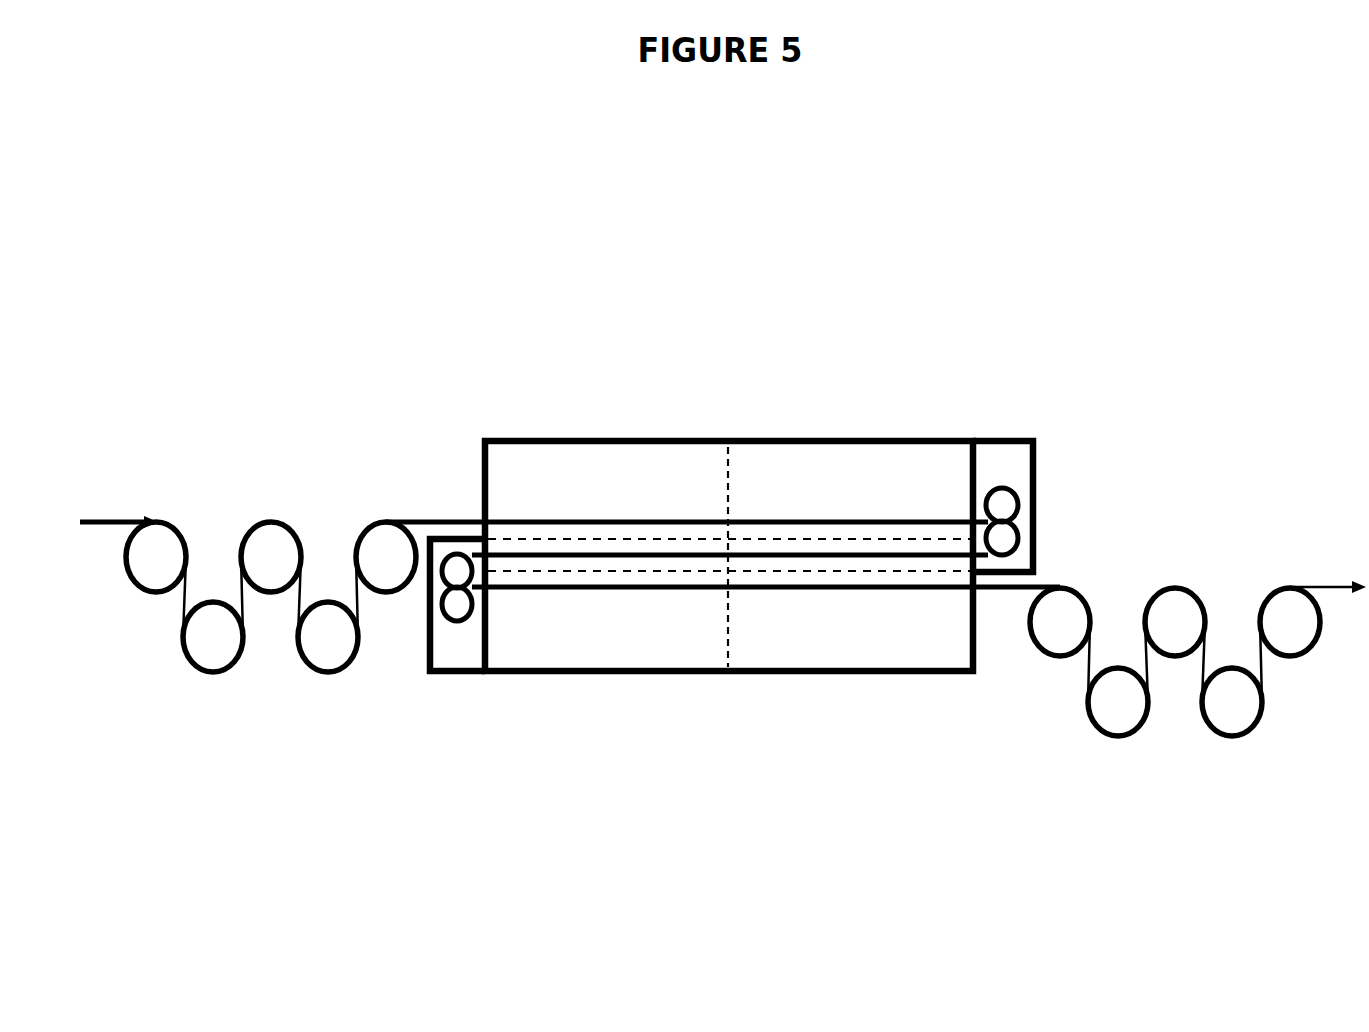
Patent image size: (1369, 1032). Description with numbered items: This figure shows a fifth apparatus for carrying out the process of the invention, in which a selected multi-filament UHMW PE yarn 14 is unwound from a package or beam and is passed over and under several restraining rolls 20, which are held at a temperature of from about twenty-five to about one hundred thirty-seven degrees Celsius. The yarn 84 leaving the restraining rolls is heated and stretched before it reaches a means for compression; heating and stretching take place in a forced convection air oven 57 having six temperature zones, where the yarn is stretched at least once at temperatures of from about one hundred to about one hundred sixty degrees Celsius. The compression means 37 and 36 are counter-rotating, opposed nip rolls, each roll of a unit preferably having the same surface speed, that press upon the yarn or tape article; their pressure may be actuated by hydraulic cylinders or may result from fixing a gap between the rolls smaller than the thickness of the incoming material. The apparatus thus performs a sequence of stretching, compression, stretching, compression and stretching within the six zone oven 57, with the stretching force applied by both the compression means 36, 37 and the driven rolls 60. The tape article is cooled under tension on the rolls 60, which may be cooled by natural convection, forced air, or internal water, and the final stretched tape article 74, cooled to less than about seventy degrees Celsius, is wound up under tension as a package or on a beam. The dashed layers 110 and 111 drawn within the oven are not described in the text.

The multi-filament UHMW PE yarn 14 is at (113, 520).
The restraining rolls 20 is at (177, 530).
The yarn leaving the restraining rolls 84 is at (436, 503).
The compression means 37 is at (457, 622).
The compression means 36 is at (1002, 487).
The first layer 110 is at (630, 555).
The second layer 111 is at (652, 592).
The six zone oven 57 is at (727, 447).
The driven rolls 60 is at (1277, 590).
The final stretched tape article 74 is at (1338, 587).